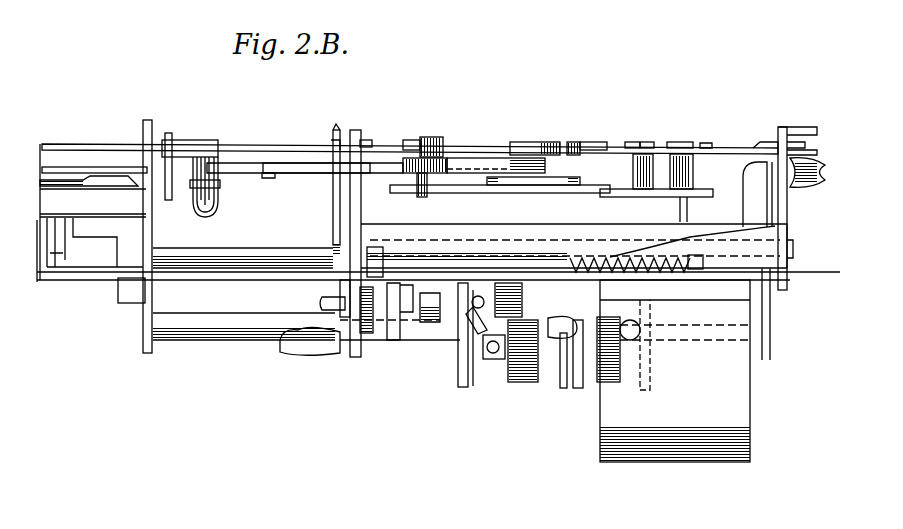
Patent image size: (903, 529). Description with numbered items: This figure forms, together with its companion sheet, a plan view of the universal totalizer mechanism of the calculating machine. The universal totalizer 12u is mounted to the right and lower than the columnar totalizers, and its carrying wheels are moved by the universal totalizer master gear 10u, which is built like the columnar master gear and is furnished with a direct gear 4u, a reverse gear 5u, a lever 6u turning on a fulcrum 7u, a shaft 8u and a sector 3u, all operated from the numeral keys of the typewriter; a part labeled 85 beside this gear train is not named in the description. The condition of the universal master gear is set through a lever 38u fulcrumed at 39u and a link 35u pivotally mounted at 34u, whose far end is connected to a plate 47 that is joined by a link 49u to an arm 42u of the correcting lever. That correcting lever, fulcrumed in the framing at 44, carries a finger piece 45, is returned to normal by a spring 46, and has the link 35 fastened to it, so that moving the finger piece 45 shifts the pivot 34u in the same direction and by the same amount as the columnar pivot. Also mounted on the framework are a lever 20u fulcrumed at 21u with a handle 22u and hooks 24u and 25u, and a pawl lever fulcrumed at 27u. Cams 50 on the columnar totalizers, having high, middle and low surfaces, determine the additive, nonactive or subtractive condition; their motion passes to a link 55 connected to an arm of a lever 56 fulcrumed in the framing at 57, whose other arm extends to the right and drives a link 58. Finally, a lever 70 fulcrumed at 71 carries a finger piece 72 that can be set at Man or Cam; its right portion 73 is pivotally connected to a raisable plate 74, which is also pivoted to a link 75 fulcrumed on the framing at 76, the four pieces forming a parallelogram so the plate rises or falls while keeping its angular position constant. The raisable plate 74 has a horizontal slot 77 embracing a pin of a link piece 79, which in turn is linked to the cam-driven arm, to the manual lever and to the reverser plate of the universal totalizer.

The lever 70 is at (722, 152).
The finger piece 72 is at (824, 168).
The lever 56 is at (246, 146).
The link 55 is at (86, 147).
The link 35 is at (110, 175).
The fulcrum of lever 56 57 is at (150, 182).
The fulcrum of correcting lever 44 is at (190, 153).
The spring 46 is at (190, 210).
The finger piece 45 is at (198, 215).
The arm of correcting lever 42u is at (256, 178).
The link 49u is at (303, 176).
The fulcrum of pawl lever 27u is at (247, 235).
The lever 20u is at (333, 213).
The link 58 is at (335, 147).
The cams 50 is at (386, 150).
The link 35u is at (456, 158).
The hub 85 is at (436, 152).
The lever 38u is at (472, 166).
The fulcrum of lever 38u 39u is at (423, 190).
The pivot of link 35u 34u is at (535, 193).
The link piece 79 is at (530, 148).
The link 75 is at (558, 155).
The raisable plate 74 is at (545, 160).
The plate 47 is at (597, 189).
The fulcrum of link 75 76 is at (630, 147).
The right portion of lever 70 73 is at (652, 150).
The fulcrum of lever 70 71 is at (683, 147).
The horizontal slot 77 is at (850, 279).
The fulcrum of lever 20u 21u is at (438, 251).
The reverse gear 5u is at (516, 285).
The hook 25u is at (317, 268).
The hook 24u is at (333, 283).
The handle 22u is at (281, 350).
The lever 6u is at (478, 320).
The fulcrum 7u is at (483, 325).
The sector 3u is at (443, 300).
The shaft 8u is at (478, 338).
The direct gear 4u is at (532, 407).
The universal totalizer master gear 10u is at (592, 406).
The universal totalizer 12u is at (718, 402).